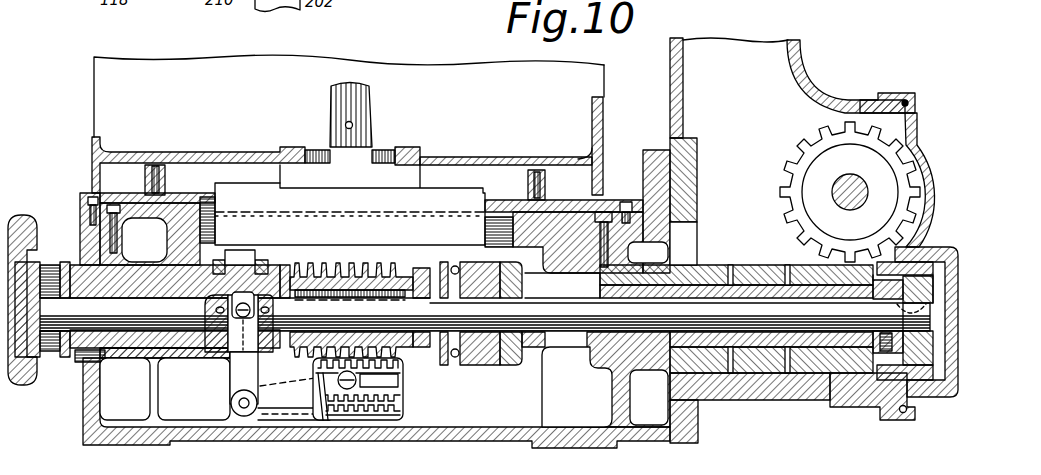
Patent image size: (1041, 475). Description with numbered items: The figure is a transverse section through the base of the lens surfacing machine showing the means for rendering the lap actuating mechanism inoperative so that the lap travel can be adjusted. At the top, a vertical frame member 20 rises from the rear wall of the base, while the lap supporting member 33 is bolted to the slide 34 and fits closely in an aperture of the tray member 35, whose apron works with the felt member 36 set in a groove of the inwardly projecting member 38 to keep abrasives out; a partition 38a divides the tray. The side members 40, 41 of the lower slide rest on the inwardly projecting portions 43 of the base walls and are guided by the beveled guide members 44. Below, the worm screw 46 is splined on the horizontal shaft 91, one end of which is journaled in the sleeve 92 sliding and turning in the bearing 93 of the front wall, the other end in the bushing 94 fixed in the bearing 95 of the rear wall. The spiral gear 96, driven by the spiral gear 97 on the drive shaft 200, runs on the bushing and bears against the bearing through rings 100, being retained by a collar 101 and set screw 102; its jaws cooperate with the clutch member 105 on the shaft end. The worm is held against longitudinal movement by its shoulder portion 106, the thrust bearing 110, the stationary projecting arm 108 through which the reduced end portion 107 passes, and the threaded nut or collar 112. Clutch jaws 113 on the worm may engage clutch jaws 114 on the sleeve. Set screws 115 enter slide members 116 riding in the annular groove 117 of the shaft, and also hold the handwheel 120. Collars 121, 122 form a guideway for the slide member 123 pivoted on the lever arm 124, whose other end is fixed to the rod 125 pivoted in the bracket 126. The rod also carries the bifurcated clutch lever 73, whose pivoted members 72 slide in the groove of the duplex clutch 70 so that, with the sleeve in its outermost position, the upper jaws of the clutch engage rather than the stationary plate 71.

The vertical frame member 20 is at (800, 53).
The lap supporting member 33 is at (378, 147).
The slide 34 is at (253, 202).
The tray member 35 is at (602, 123).
The felt member 36 is at (167, 174).
The inwardly projecting member 38 is at (526, 189).
The partition 38a is at (590, 90).
The side member 40 is at (217, 230).
The side member 41 is at (555, 225).
The inwardly projecting portion 43 is at (82, 232).
The beveled guide member 44 is at (128, 213).
The worm screw 46 is at (367, 270).
The duplex clutch 70 is at (399, 368).
The stationary plate 71 is at (403, 413).
The pivoted member 72 is at (355, 414).
The bifurcated clutch lever 73 is at (322, 421).
The horizontal shaft 91 is at (548, 348).
The sleeve 92 is at (183, 345).
The bearing 93 is at (127, 371).
The bushing 94 is at (563, 330).
The bearing 95 is at (600, 370).
The spiral gear 96 is at (840, 368).
The spiral gear 97 is at (908, 182).
The ring 100 is at (735, 267).
The collar 101 is at (934, 279).
The set screw 102 is at (904, 360).
The clutch member 105 is at (920, 262).
The shoulder portion 106 is at (447, 360).
The reduced end portion 107 is at (488, 366).
The stationary projecting arm 108 is at (478, 366).
The thrust bearing 110 is at (460, 263).
The threaded nut or collar 112 is at (527, 278).
The clutch jaws 113 is at (259, 386).
The clutch jaws 114 is at (286, 270).
The set screw 115 is at (53, 351).
The slide member 116 is at (72, 266).
The annular groove 117 is at (60, 301).
The handwheel 120 is at (21, 388).
The collar 121 is at (217, 250).
The collar 122 is at (262, 263).
The slide member 123 is at (148, 299).
The lever arm 124 is at (178, 372).
The rod 125 is at (230, 402).
The bracket 126 is at (290, 421).
The shaft 200 is at (847, 205).